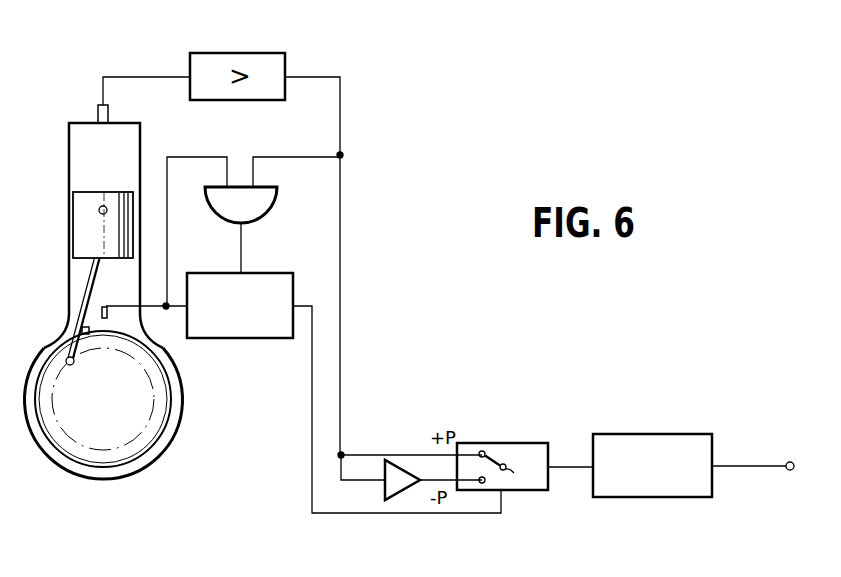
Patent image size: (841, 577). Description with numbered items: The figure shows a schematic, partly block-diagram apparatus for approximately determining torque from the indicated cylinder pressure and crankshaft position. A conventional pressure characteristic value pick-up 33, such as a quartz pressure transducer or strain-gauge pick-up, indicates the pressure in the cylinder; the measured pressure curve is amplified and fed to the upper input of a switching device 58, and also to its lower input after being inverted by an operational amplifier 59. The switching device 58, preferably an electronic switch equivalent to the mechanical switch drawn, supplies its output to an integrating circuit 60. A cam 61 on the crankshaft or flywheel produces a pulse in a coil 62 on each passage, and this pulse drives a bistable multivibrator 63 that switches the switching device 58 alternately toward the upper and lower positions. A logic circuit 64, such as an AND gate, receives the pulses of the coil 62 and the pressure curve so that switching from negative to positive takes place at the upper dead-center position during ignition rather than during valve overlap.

The pressure characteristic value pick-up 33 is at (109, 117).
The switching device 58 is at (534, 443).
The operational amplifier 59 is at (400, 500).
The integrating circuit 60 is at (703, 434).
The cam 61 is at (81, 330).
The coil 62 is at (103, 306).
The bistable multivibrator 63 is at (241, 338).
The logic circuit 64 is at (270, 208).